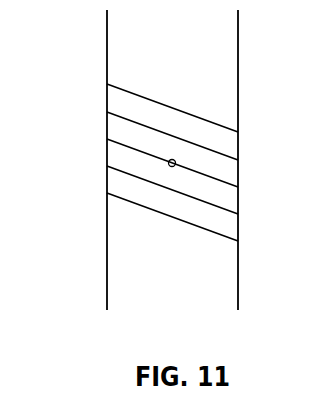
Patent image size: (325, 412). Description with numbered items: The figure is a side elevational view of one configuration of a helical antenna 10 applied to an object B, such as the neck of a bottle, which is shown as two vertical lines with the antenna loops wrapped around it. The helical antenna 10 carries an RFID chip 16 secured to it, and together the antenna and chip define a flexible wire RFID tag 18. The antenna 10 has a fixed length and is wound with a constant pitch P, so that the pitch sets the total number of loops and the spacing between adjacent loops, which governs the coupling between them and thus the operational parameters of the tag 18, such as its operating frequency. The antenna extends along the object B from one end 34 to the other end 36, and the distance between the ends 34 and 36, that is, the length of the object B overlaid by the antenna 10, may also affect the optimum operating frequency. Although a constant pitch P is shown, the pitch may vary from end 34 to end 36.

The object B is at (238, 52).
The helical antenna 10 is at (160, 103).
The end 34 is at (107, 85).
The other end 36 is at (238, 240).
The pitch P is at (99, 87).
The RFID chip 16 is at (168, 164).
The flexible wire RFID tag 18 is at (173, 244).